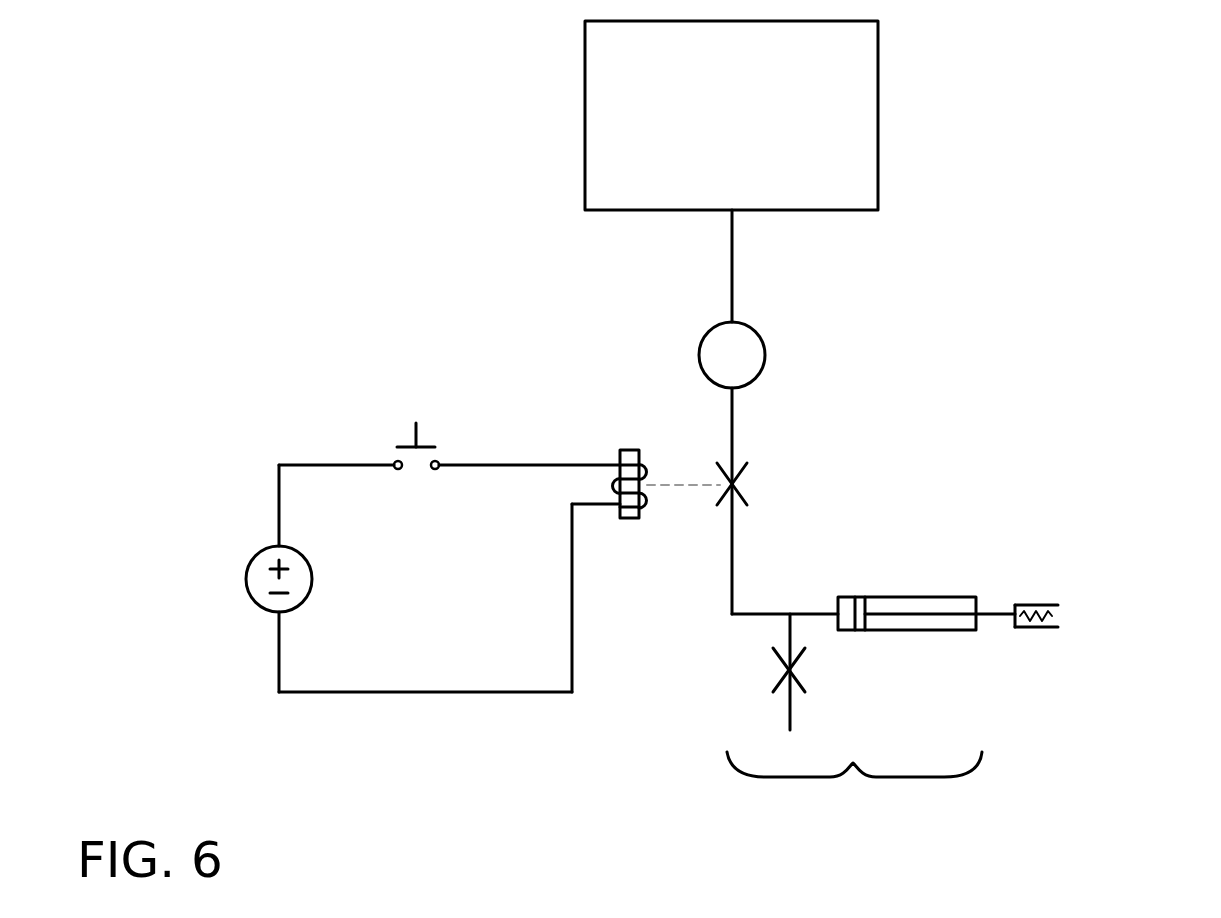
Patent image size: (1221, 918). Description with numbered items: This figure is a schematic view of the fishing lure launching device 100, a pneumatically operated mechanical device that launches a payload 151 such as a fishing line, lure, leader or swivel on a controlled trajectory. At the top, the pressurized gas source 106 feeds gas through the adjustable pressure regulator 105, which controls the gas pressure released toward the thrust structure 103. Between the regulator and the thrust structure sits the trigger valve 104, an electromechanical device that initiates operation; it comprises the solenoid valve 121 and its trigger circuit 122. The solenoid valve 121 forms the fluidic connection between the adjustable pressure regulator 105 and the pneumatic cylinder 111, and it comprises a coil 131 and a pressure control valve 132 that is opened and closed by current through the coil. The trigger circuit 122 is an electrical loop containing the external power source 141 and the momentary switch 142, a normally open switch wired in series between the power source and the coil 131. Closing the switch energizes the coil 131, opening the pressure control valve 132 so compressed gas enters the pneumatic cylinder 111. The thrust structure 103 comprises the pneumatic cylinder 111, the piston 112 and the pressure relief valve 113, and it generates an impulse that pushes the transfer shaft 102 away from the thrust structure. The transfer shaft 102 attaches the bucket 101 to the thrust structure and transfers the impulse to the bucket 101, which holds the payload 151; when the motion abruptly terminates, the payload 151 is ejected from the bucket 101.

The fishing lure launching device 100 is at (115, 299).
The pressurized gas source 106 is at (900, 107).
The adjustable pressure regulator 105 is at (782, 353).
The solenoid valve 121 is at (715, 465).
The pressure control valve 132 is at (755, 483).
The coil 131 is at (632, 520).
The trigger circuit 122 is at (284, 437).
The momentary switch 142 is at (428, 433).
The external power source 141 is at (313, 590).
The trigger valve 104 is at (323, 702).
The pneumatic cylinder 111 is at (923, 590).
The piston 112 is at (858, 593).
The transfer shaft 102 is at (938, 615).
The bucket 101 is at (1038, 583).
The payload 151 is at (1073, 614).
The pressure relief valve 113 is at (760, 667).
The thrust structure 103 is at (854, 800).